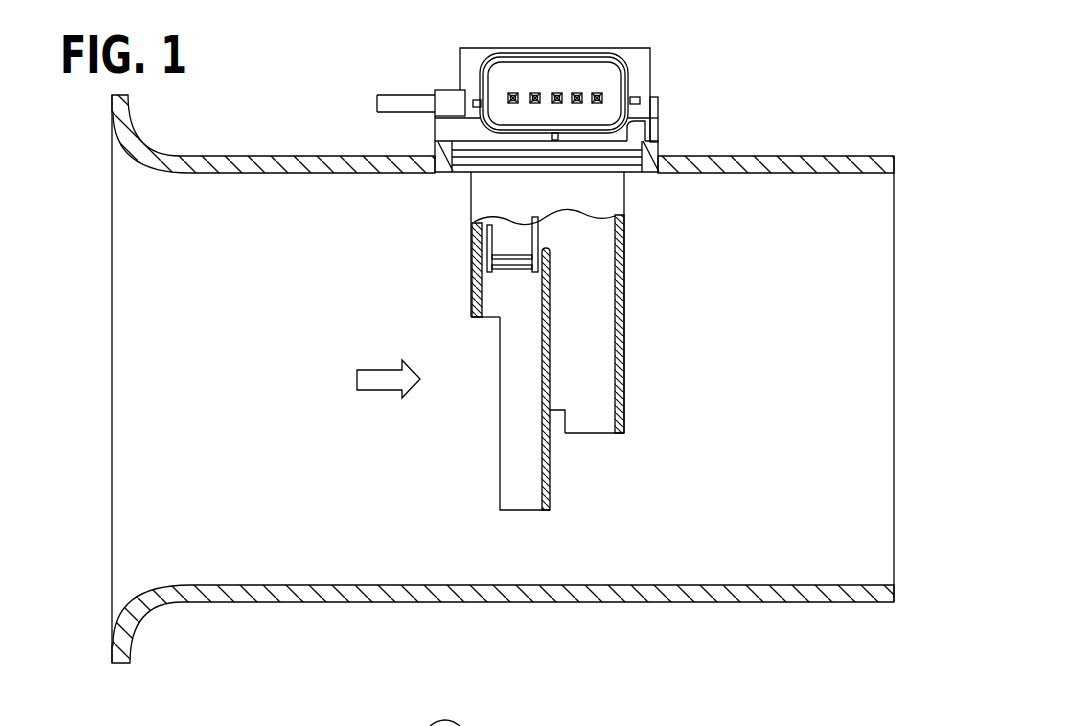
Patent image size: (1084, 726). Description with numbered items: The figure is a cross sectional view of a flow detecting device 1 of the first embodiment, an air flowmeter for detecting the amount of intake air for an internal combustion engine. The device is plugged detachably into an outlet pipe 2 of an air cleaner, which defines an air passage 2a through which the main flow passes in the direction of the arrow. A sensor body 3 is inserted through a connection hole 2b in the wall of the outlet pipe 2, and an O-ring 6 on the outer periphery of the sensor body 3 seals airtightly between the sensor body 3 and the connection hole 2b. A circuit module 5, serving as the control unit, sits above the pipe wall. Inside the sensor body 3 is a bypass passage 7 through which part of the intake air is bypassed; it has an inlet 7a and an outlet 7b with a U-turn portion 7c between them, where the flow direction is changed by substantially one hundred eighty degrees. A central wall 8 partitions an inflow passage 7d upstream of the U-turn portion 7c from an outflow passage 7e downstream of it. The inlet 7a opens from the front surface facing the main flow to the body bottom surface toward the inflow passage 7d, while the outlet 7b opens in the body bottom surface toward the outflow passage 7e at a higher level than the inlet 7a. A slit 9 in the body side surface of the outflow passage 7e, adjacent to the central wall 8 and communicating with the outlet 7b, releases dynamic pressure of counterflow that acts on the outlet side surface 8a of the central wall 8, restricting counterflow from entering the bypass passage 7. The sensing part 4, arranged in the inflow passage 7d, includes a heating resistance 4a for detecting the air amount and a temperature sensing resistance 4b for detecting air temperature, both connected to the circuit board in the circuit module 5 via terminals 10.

The flow detecting device 1 is at (648, 32).
The outlet pipe 2 is at (878, 127).
The air passage 2a is at (868, 237).
The connection hole 2b is at (658, 113).
The sensor body 3 is at (625, 268).
The sensing part 4 is at (400, 238).
The heating resistance 4a is at (492, 257).
The temperature sensing resistance 4b is at (515, 272).
The circuit module 5 is at (473, 58).
The O-ring 6 is at (655, 152).
The bypass passage 7 is at (667, 288).
The inlet 7a is at (488, 318).
The outlet 7b is at (590, 433).
The U-turn portion 7c is at (543, 235).
The inflow passage 7d is at (527, 333).
The outflow passage 7e is at (590, 364).
The central wall 8 is at (542, 410).
The outlet side surface 8a is at (553, 492).
The slit 9 is at (558, 420).
The terminals 10 is at (532, 224).